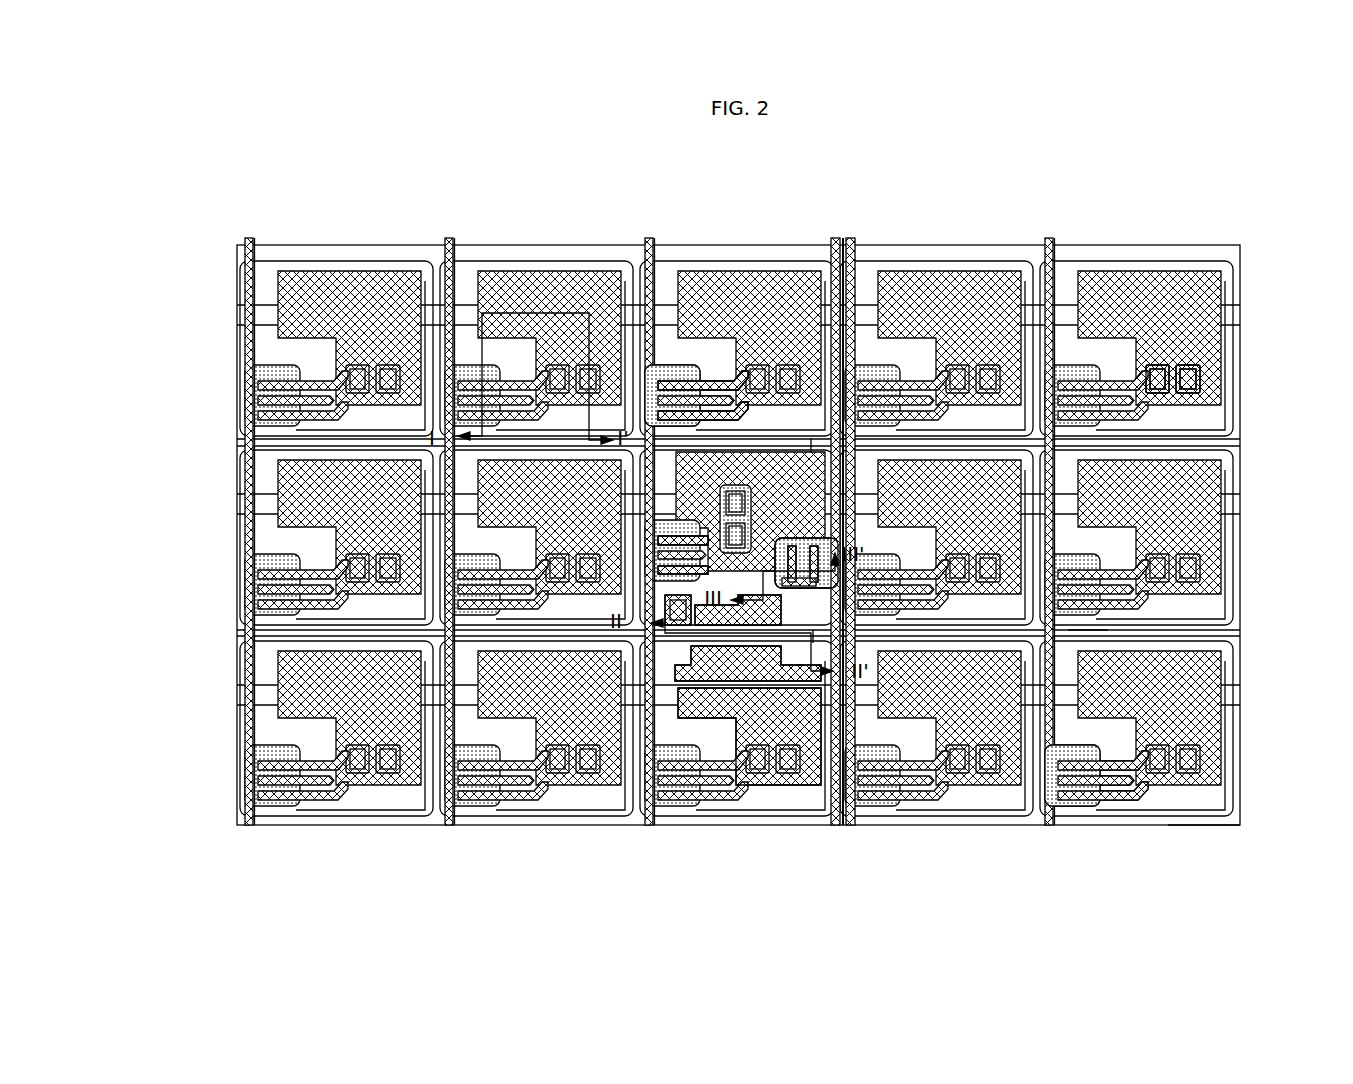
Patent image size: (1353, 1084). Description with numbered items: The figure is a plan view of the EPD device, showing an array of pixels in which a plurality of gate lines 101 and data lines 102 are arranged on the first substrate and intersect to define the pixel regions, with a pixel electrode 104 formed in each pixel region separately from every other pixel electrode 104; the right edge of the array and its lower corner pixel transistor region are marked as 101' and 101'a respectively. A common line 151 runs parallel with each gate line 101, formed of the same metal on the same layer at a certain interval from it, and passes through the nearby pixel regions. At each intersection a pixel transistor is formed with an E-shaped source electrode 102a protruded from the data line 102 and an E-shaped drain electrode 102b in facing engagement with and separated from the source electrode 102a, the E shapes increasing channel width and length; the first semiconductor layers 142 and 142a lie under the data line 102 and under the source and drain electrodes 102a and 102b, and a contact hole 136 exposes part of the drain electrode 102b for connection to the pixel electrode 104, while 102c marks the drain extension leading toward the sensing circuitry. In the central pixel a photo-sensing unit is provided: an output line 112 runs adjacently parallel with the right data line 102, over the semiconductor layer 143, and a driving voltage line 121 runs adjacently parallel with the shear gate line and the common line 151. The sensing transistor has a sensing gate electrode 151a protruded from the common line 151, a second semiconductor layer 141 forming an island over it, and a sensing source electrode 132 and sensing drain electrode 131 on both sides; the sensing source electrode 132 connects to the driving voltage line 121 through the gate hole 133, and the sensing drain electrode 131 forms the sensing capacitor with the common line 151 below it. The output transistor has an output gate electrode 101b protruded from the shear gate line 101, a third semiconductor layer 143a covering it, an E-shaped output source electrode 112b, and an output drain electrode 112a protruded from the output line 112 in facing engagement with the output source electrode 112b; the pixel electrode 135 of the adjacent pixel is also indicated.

The gate line 101 is at (674, 535).
The edge of substrate 101' is at (1204, 866).
The thin film transistor region 101'a is at (1096, 827).
The output gate electrode 101b is at (790, 562).
The data line 102 is at (650, 255).
The source electrode 102a is at (673, 348).
The drain electrode 102b is at (728, 352).
The drain extension 102c is at (803, 430).
The pixel electrode 104 is at (355, 252).
The output line 112 is at (788, 453).
The output drain electrode 112a is at (838, 500).
The output source electrode 112b is at (1082, 624).
The driving voltage line 121 is at (235, 630).
The sensing drain electrode 131 is at (708, 665).
The sensing source electrode 132 is at (750, 613).
The gate hole 133 is at (673, 623).
The pixel electrode 135 is at (980, 265).
The contact hole 136 is at (1185, 355).
The second semiconductor layer 141 is at (745, 680).
The first semiconductor layer 142 is at (668, 300).
The first semiconductor layer 142a is at (697, 355).
The semiconductor layer 143 is at (828, 300).
The third semiconductor layer 143a is at (813, 540).
The common line 151 is at (1205, 745).
The sensing gate electrode 151a is at (815, 627).